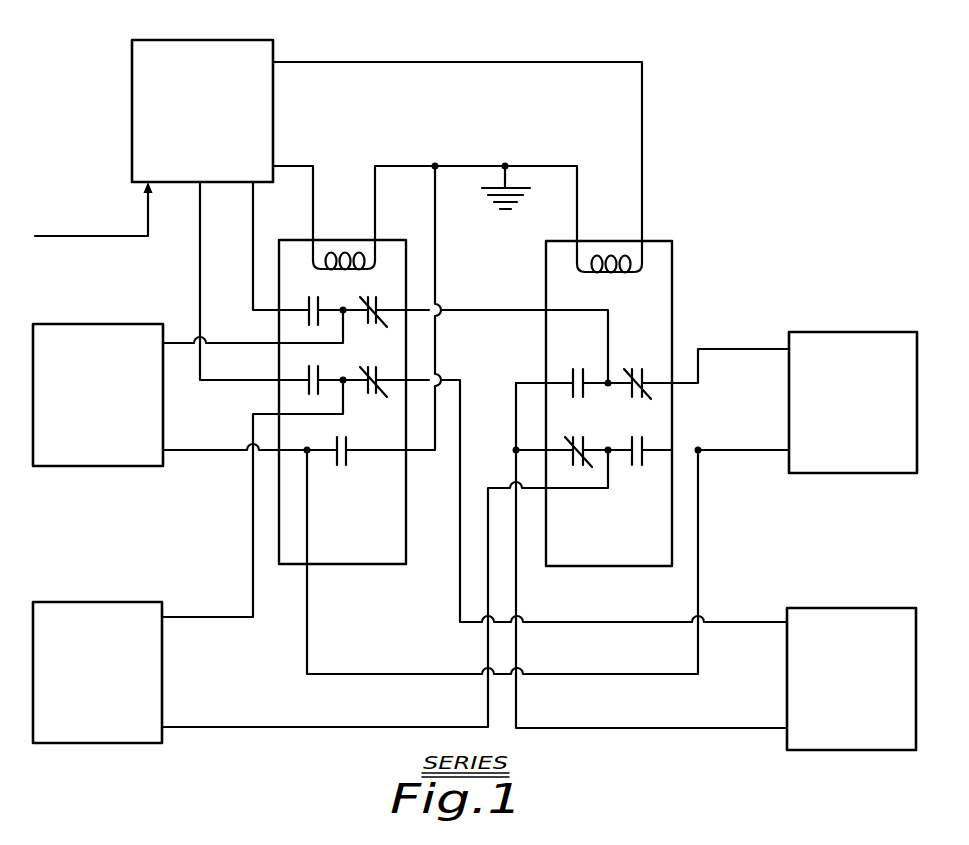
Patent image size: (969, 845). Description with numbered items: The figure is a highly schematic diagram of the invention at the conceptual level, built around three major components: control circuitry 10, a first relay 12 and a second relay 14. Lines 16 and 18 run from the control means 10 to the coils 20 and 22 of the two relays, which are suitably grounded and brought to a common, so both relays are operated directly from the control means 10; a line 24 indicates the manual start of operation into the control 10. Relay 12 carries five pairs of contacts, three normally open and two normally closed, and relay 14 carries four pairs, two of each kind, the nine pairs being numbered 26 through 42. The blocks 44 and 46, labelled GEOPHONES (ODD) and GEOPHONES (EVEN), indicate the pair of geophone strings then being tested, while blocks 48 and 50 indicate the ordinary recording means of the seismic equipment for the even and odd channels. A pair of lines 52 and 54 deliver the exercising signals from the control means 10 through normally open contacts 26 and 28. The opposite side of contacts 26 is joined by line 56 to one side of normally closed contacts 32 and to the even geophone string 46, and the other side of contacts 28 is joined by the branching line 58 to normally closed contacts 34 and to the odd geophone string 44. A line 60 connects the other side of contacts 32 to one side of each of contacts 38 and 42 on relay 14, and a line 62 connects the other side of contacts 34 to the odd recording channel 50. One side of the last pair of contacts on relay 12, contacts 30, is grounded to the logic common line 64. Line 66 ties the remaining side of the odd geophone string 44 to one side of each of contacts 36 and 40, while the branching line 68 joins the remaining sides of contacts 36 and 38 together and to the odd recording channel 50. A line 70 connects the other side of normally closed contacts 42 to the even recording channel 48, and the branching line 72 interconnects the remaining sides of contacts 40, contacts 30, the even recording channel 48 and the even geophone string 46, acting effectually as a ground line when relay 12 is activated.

The control circuitry 10 is at (226, 40).
The first relay 12 is at (340, 238).
The second relay 14 is at (603, 239).
The line 16 is at (298, 165).
The line 18 is at (643, 128).
The coil 20 is at (326, 269).
The coil 22 is at (604, 272).
The line 24 is at (106, 240).
The normally open contacts 26 is at (326, 318).
The normally open contacts 28 is at (326, 388).
The normally open contacts 30 is at (349, 447).
The normally closed contacts 32 is at (363, 330).
The normally closed contacts 34 is at (363, 400).
The normally closed contacts 36 is at (590, 441).
The normally open contacts 38 is at (590, 372).
The normally open contacts 40 is at (652, 441).
The normally closed contacts 42 is at (650, 372).
The odd geophone string 44 is at (100, 602).
The even geophone string 46 is at (108, 324).
The even recording channel 48 is at (861, 312).
The odd recording channel 50 is at (858, 608).
The line 52 is at (254, 216).
The line 54 is at (201, 236).
The line 56 is at (244, 342).
The branching line 58 is at (217, 617).
The line 60 is at (522, 310).
The line 62 is at (756, 622).
The logic common line 64 is at (437, 258).
The line 66 is at (236, 726).
The branching line 68 is at (516, 404).
The line 70 is at (754, 349).
The branching line 72 is at (222, 448).